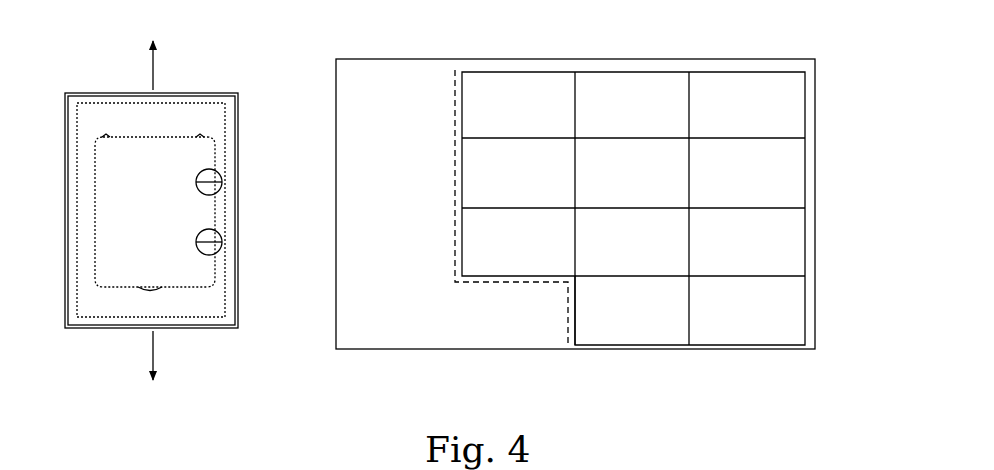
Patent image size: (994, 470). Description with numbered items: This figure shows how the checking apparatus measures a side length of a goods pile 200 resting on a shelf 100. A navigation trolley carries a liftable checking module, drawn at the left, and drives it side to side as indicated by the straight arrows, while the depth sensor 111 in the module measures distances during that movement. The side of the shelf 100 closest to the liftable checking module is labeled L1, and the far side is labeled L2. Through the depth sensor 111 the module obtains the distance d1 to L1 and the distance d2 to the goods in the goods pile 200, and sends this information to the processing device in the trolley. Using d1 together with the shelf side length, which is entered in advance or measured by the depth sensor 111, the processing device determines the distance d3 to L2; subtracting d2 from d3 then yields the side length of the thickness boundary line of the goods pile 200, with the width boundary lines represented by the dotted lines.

The shelf 100 is at (373, 57).
The goods pile 200 is at (788, 184).
The depth sensor 111 is at (218, 247).
The side of the shelf close to the liftable checking module L1 is at (335, 92).
The side of the shelf away from the liftable checking module L2 is at (816, 91).
The distance between the liftable checking module and L1 d1 is at (334, 174).
The distance between the goods in the goods pile and the liftable checking module d2 is at (452, 185).
The distance between the liftable checking module and L2 d3 is at (822, 377).